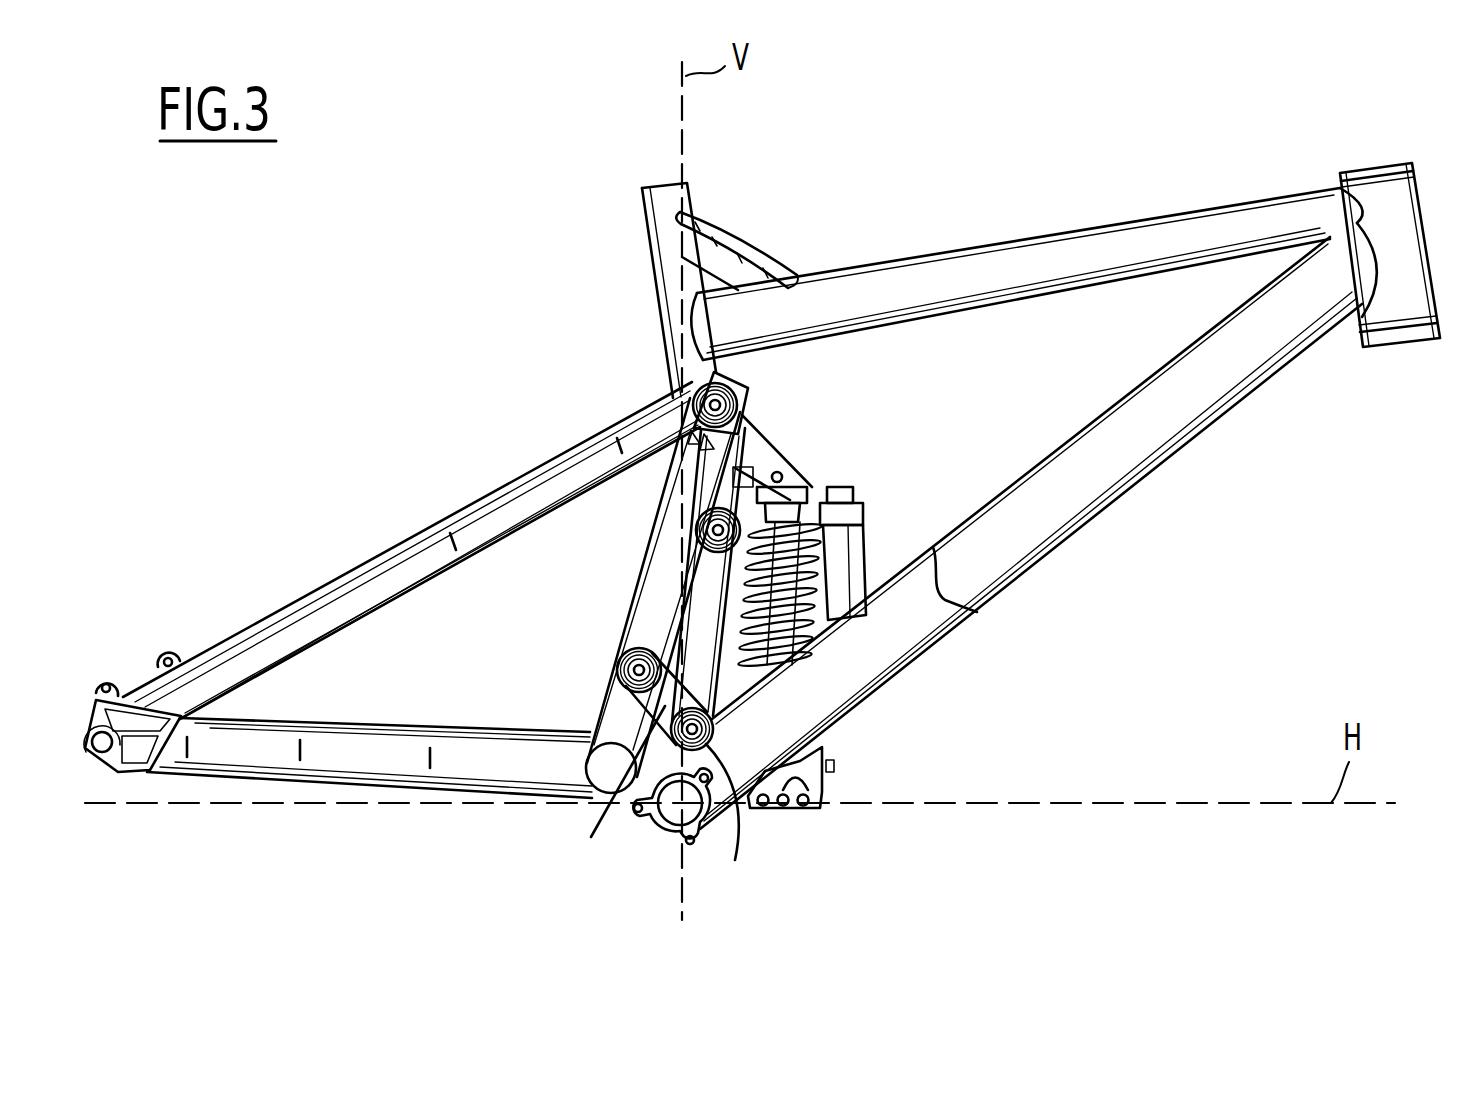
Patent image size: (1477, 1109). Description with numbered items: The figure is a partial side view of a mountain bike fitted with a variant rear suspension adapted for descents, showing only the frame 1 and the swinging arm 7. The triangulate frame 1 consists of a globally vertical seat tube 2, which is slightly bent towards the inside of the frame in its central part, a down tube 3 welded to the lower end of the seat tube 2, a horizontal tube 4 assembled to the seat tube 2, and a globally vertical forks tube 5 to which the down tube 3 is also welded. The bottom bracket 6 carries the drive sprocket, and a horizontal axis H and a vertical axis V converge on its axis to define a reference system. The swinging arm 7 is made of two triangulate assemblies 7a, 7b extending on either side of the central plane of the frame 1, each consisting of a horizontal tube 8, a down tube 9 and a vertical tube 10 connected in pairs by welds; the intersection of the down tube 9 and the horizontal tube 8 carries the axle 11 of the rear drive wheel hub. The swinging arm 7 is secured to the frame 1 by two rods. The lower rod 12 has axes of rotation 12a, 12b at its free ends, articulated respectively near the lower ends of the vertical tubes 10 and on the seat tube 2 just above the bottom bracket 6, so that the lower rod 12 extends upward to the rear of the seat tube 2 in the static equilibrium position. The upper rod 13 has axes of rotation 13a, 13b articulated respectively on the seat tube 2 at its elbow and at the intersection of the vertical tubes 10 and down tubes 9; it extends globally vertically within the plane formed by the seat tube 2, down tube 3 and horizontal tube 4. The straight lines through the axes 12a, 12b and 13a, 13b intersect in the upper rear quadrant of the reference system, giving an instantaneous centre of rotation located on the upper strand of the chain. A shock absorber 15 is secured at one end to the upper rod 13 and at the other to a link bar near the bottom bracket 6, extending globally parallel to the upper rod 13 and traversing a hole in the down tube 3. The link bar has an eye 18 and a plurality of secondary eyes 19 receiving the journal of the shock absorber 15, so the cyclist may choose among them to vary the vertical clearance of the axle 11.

The frame 1 is at (1127, 208).
The seat tube 2 is at (660, 283).
The down tube 3 is at (1145, 440).
The horizontal tube 4 is at (958, 278).
The forks tube 5 is at (1393, 248).
The bottom bracket 6 is at (680, 816).
The swinging arm 7 is at (238, 614).
The triangular assembly 7a is at (322, 576).
The triangular assembly 7b is at (416, 552).
The horizontal tube 8 is at (335, 756).
The down tube 9 is at (425, 548).
The vertical tube 10 is at (655, 580).
The axle 11 is at (100, 760).
The lower rod 12 is at (667, 706).
The axis of rotation 12a is at (634, 672).
The axis of rotation 12b is at (770, 812).
The upper rod 13 is at (740, 465).
The axis of rotation 13a is at (735, 524).
The axis of rotation 13b is at (702, 400).
The shock absorber 15 is at (870, 530).
The eye 18 is at (845, 800).
The secondary eyes 19 is at (800, 810).